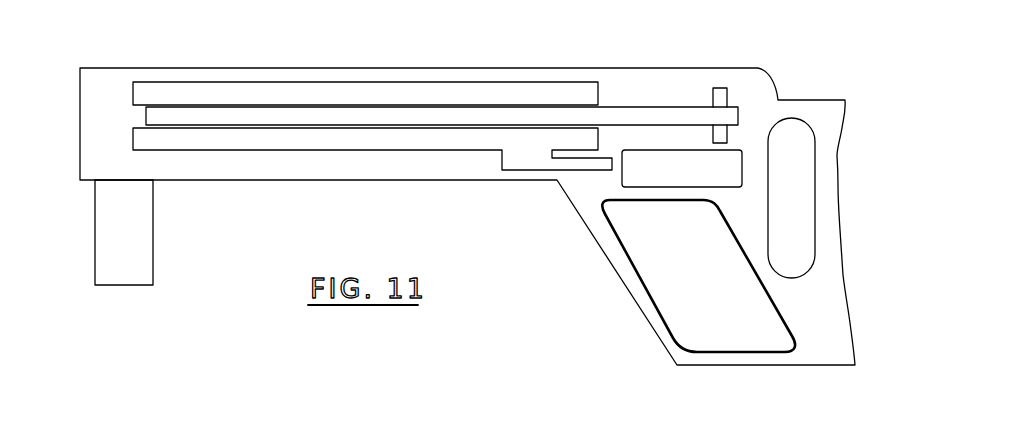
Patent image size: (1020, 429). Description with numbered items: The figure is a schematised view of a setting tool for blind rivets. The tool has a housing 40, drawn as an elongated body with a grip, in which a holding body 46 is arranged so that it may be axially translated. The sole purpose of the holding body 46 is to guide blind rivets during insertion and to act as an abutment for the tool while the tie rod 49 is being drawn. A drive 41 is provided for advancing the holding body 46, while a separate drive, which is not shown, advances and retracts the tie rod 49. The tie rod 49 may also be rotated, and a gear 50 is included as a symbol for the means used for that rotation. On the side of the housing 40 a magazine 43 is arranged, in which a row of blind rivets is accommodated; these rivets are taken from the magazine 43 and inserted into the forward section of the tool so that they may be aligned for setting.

The housing 40 is at (203, 75).
The drive 41 is at (720, 165).
The magazine 43 is at (128, 220).
The holding body 46 is at (405, 95).
The tie rod 49 is at (543, 117).
The gear 50 is at (722, 103).